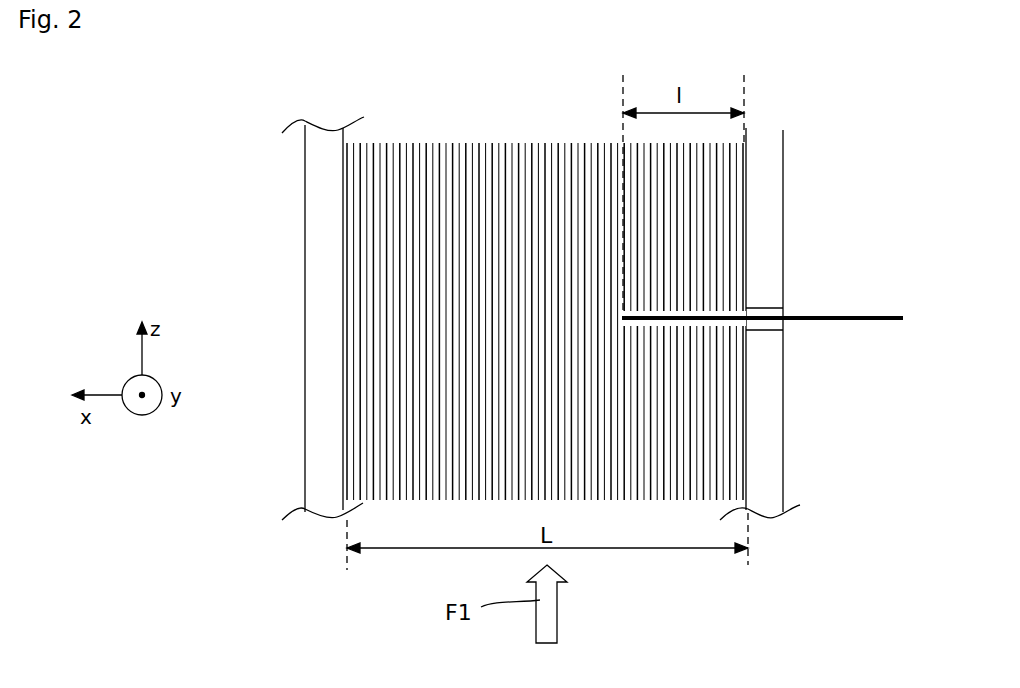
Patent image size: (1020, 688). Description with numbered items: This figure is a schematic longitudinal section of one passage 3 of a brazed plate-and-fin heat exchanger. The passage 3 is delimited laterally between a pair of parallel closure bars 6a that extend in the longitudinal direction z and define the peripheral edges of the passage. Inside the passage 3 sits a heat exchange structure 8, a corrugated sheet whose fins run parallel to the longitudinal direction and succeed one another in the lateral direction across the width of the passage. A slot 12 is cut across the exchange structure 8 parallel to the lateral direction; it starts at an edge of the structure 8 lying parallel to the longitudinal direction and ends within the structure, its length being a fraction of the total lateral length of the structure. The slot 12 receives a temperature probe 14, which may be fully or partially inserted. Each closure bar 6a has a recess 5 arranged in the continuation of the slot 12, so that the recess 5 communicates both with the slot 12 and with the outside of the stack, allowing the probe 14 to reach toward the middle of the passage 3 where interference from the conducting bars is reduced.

The passage 3 is at (545, 276).
The heat exchange structure 8 is at (471, 158).
The closure bar 6a is at (318, 427).
The slot 12 is at (717, 312).
The recess 5 is at (770, 308).
The temperature probe 14 is at (756, 320).